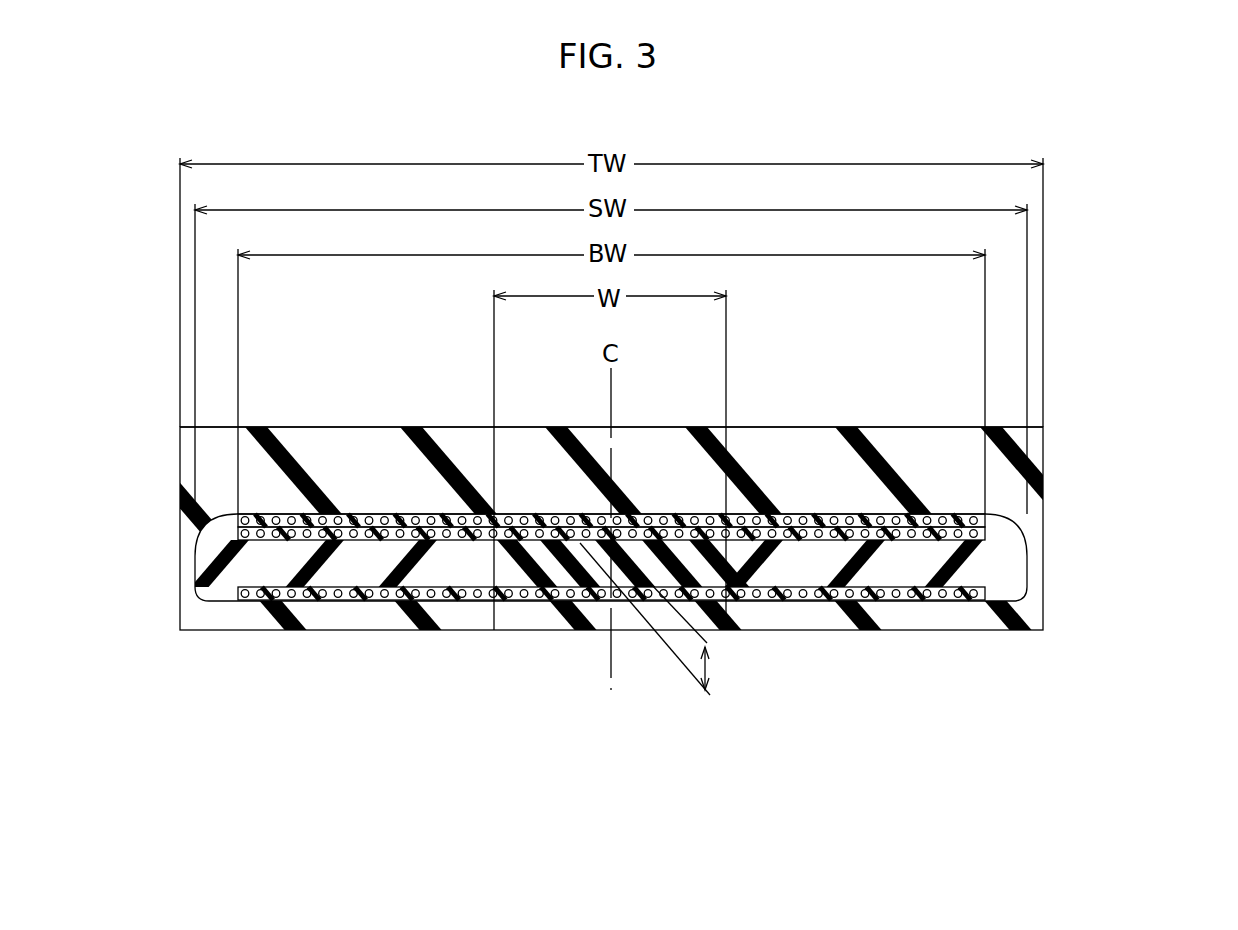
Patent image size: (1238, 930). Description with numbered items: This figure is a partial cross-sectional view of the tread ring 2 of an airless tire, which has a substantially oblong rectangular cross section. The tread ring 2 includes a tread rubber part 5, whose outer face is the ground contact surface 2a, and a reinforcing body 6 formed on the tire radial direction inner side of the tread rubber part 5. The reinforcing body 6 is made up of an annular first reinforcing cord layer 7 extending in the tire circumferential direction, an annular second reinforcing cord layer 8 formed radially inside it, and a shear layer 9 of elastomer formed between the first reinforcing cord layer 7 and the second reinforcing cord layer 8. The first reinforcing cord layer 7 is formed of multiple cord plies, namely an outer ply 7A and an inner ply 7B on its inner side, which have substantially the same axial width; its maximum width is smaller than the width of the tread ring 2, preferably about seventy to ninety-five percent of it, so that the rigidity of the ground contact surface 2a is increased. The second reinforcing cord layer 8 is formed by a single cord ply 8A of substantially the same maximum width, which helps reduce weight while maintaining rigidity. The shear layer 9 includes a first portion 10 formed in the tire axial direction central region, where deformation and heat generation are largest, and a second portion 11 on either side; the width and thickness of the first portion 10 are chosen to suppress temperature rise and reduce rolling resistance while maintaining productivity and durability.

The tread ring 2 is at (1080, 411).
The ground contact surface 2a is at (359, 427).
The tread rubber part 5 is at (788, 455).
The reinforcing body 6 is at (708, 547).
The first reinforcing cord layer 7 is at (711, 485).
The outer ply 7A is at (935, 515).
The inner ply 7B is at (958, 547).
The second reinforcing cord layer 8 is at (711, 624).
The cord ply 8A is at (611, 593).
The shear layer 9 is at (1012, 567).
The first portion 10 is at (547, 565).
The second portion 11 is at (368, 568).